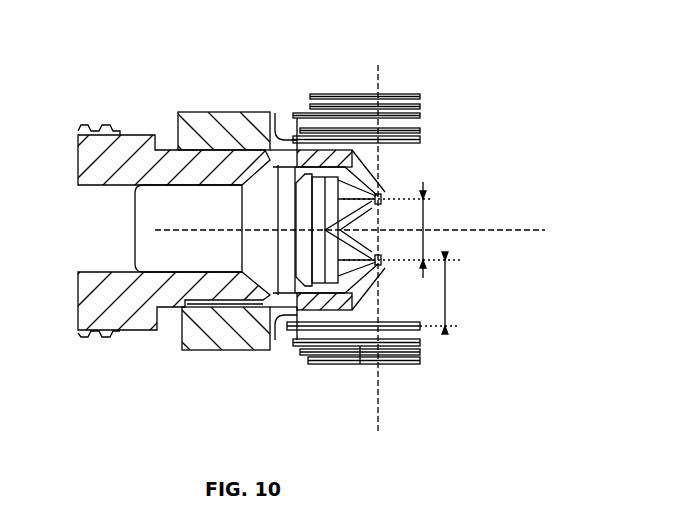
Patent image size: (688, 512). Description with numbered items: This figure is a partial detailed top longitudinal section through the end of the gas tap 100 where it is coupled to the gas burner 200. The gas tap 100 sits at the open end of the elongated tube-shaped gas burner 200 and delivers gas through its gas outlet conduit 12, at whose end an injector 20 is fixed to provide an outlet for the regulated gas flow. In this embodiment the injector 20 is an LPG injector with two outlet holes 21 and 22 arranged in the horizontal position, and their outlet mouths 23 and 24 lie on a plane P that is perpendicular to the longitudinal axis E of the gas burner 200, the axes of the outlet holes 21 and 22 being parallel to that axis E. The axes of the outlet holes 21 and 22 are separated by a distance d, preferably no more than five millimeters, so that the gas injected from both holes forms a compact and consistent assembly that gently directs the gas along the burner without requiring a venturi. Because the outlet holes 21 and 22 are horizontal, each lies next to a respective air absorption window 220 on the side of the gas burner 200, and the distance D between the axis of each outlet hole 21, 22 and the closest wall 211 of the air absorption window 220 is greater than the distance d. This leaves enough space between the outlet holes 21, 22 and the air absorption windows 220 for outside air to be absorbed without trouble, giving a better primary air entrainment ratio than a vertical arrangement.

The gas tap 100 is at (110, 106).
The gas outlet conduit 12 is at (163, 176).
The injector 20 is at (227, 328).
The outlet hole 21 is at (375, 190).
The outlet hole 22 is at (355, 282).
The outlet mouth 23 is at (381, 195).
The outlet mouth 24 is at (381, 263).
The gas burner 200 is at (410, 233).
The closest wall of the air absorption window 211 is at (416, 326).
The air absorption window 220 is at (388, 360).
The plane P is at (380, 98).
The distance between the axes of the outlet holes d is at (402, 230).
The distance between outlet hole axis and closest window wall D is at (448, 293).
The longitudinal axis E is at (487, 231).